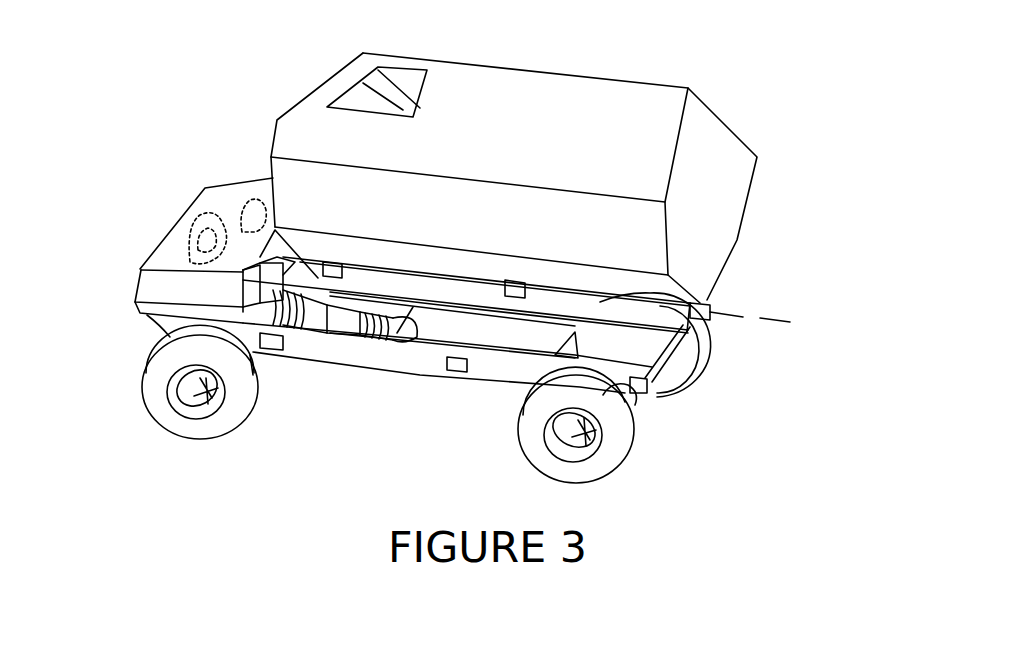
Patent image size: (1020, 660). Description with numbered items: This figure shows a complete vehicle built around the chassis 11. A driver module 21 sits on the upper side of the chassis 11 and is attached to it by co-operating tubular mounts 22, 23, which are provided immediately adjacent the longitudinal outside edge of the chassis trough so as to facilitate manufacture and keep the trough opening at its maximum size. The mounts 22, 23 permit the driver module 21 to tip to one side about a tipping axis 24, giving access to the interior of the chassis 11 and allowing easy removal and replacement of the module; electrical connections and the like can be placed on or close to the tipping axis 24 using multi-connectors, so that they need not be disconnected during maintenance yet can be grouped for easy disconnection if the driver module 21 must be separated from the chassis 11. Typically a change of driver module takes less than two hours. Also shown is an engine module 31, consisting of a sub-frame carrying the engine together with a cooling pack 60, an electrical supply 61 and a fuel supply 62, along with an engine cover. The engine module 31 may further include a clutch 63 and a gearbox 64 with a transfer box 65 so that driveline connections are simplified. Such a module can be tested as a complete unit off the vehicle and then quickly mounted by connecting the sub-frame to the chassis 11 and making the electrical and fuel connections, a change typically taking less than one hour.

The chassis 11 is at (364, 360).
The driver module 21 is at (570, 90).
The tubular mount 22 is at (713, 310).
The tubular mount 23 is at (445, 378).
The tipping axis 24 is at (760, 318).
The engine module 31 is at (230, 172).
The cooling pack 60 is at (187, 231).
The electrical supply 61 is at (253, 198).
The fuel supply 62 is at (283, 233).
The clutch 63 is at (310, 277).
The gearbox 64 is at (333, 308).
The transfer box 65 is at (403, 297).